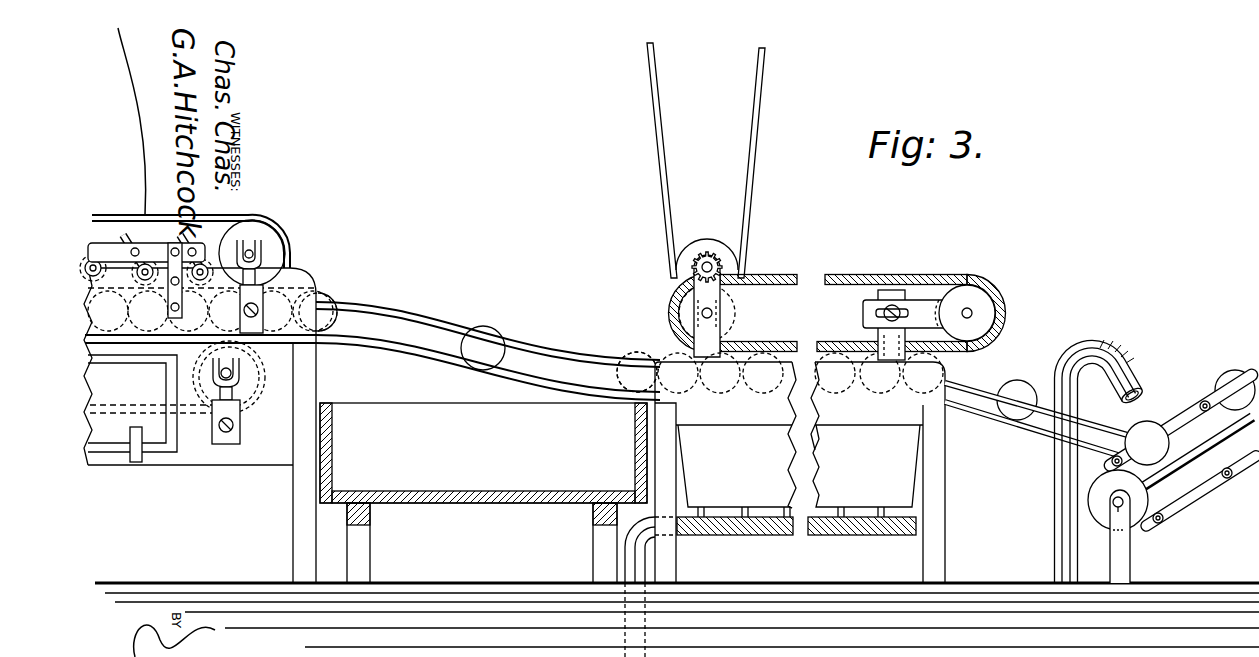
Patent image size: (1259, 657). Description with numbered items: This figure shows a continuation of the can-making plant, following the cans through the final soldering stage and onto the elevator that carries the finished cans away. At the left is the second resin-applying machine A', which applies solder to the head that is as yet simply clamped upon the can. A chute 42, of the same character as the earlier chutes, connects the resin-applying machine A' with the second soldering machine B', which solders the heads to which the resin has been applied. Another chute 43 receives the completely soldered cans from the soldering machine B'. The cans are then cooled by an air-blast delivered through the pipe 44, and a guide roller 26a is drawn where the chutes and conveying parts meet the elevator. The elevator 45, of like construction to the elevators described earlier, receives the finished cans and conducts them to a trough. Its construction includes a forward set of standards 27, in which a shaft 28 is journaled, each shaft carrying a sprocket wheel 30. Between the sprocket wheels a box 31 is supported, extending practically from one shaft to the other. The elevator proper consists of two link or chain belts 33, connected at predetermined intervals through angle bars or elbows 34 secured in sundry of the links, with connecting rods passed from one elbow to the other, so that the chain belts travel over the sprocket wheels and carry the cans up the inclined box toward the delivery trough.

The guide roller 26a is at (493, 337).
The chute 42 is at (437, 361).
The chute 43 is at (1017, 428).
The pipe 44 is at (1128, 372).
The box 31 is at (1183, 450).
The link or chain belts 33 is at (1171, 428).
The angle bars or elbows 34 is at (1159, 524).
The elevator 45 is at (1193, 454).
The sprocket wheel 30 is at (1128, 475).
The shaft 28 is at (1119, 511).
The forward set of standards 27 is at (1120, 536).
The resin-applying machine A' is at (206, 399).
The soldering machine B' is at (901, 434).